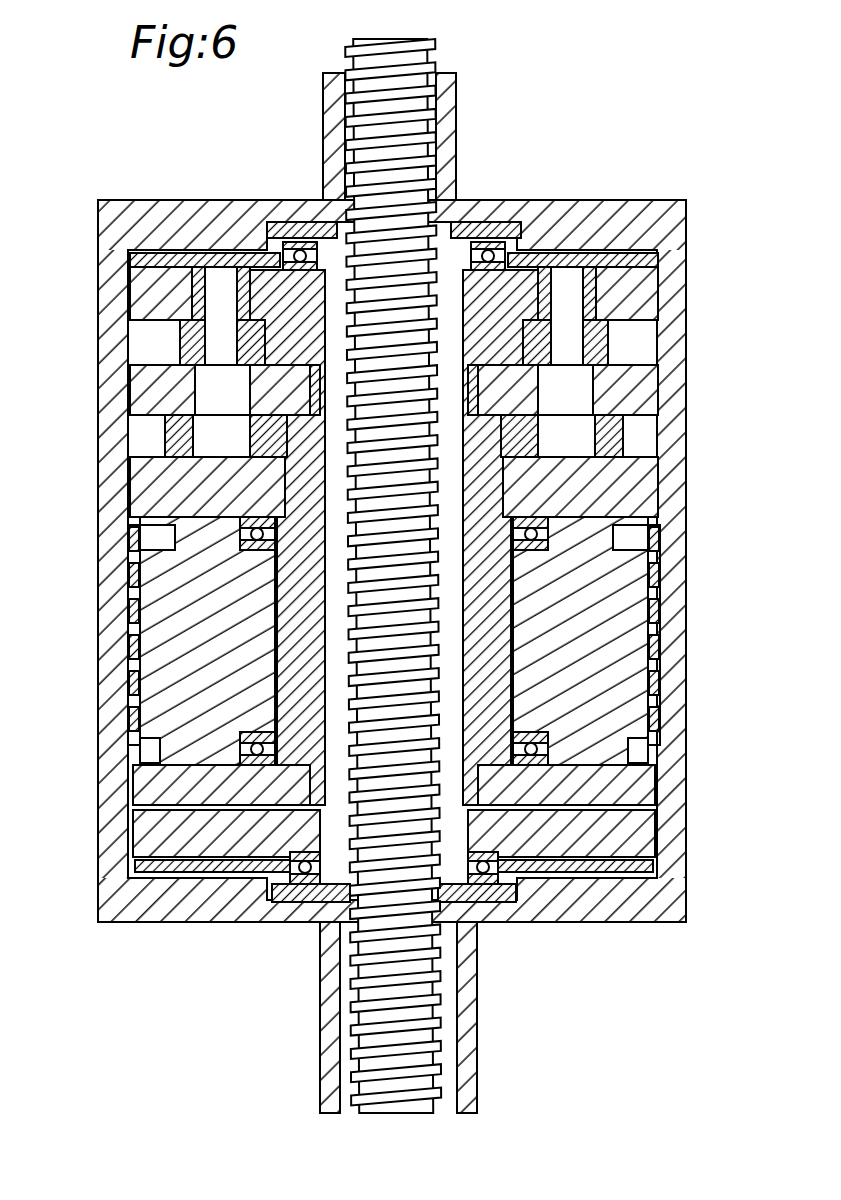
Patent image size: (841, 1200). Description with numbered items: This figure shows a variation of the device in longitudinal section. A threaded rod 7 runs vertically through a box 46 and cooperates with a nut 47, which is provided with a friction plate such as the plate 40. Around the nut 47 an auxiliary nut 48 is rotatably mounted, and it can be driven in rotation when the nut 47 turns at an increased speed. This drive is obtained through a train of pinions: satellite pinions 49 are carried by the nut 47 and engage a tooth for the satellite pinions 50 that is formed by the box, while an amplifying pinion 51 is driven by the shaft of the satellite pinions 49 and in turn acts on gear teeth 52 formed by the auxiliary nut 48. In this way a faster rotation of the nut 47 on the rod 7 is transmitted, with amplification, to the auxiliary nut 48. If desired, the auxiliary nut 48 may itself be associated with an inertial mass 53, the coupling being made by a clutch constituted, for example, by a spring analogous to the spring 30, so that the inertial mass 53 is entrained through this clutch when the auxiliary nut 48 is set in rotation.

The rod 7 is at (413, 130).
The spring 30 is at (128, 645).
The friction plate 40 is at (568, 866).
The box 46 is at (640, 900).
The nut 47 is at (632, 830).
The auxiliary nut 48 is at (625, 483).
The satellite pinions 49 is at (180, 350).
The tooth for the satellite pinions 50 is at (605, 345).
The amplifying pinion 51 is at (632, 390).
The gear teeth 52 is at (290, 347).
The inertial mass 53 is at (620, 636).